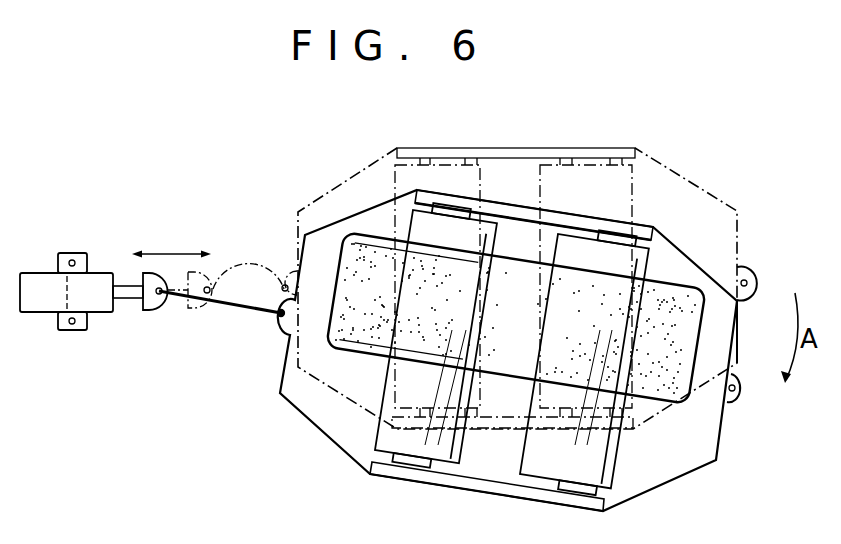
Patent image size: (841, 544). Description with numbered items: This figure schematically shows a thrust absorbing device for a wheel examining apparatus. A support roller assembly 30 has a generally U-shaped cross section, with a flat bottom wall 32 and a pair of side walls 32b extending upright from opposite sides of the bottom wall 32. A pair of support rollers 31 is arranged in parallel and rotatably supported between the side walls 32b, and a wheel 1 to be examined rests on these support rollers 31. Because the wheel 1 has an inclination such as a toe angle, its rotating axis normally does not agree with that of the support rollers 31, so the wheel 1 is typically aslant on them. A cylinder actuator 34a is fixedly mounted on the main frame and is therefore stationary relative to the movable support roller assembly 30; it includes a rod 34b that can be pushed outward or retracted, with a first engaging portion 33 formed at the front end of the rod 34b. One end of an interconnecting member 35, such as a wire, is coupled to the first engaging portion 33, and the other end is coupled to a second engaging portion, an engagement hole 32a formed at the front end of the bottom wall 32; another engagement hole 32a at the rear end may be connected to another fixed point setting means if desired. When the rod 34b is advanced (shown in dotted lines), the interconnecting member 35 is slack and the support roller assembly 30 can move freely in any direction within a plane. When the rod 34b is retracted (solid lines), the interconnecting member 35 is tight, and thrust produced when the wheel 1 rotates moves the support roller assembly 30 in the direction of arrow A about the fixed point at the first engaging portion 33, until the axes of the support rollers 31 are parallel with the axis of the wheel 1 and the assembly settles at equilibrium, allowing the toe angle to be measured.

The wheel 1 is at (688, 288).
The support roller assembly 30 is at (440, 490).
The support rollers 31 is at (433, 220).
The bottom wall 32 is at (680, 460).
The engagement hole 32a is at (282, 330).
The side walls 32b is at (516, 204).
The first engaging portion 33 is at (153, 311).
The cylinder actuator 34a is at (40, 302).
The rod 34b is at (125, 300).
The interconnecting member 35 is at (237, 306).